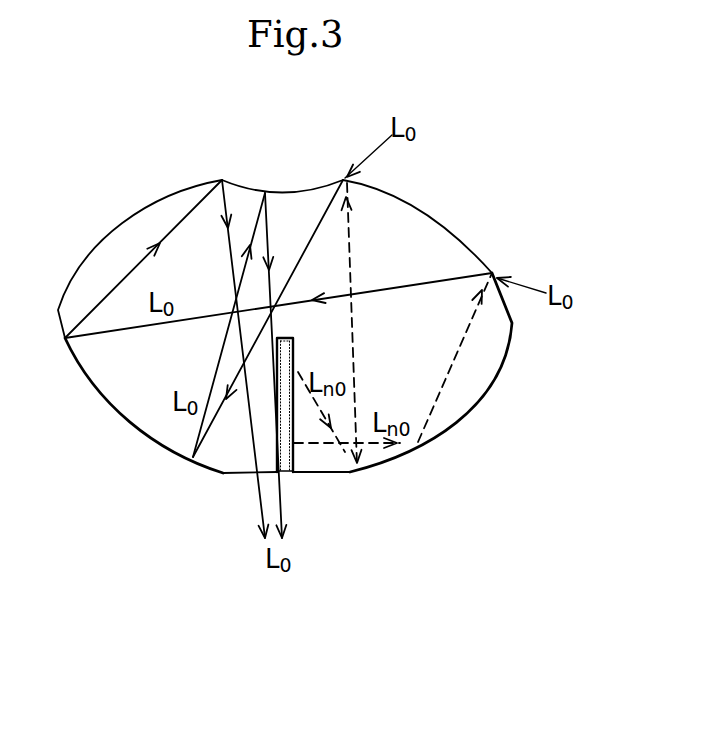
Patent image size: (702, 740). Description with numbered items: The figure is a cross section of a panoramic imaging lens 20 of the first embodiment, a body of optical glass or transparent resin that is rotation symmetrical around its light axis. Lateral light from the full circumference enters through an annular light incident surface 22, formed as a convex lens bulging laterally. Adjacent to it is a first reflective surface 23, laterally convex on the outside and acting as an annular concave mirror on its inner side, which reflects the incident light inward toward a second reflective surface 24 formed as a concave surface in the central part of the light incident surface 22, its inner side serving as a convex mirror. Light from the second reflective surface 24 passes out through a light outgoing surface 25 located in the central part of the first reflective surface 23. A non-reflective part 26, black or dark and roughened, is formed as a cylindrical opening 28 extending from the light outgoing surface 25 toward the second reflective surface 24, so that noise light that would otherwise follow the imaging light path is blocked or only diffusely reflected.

The panoramic imaging lens 20 is at (486, 181).
The light incident surface 22 is at (468, 243).
The first reflective surface 23 is at (481, 395).
The second reflective surface 24 is at (302, 190).
The light outgoing surface 25 is at (322, 475).
The non-reflective part 26 is at (278, 373).
The opening 28 is at (287, 470).